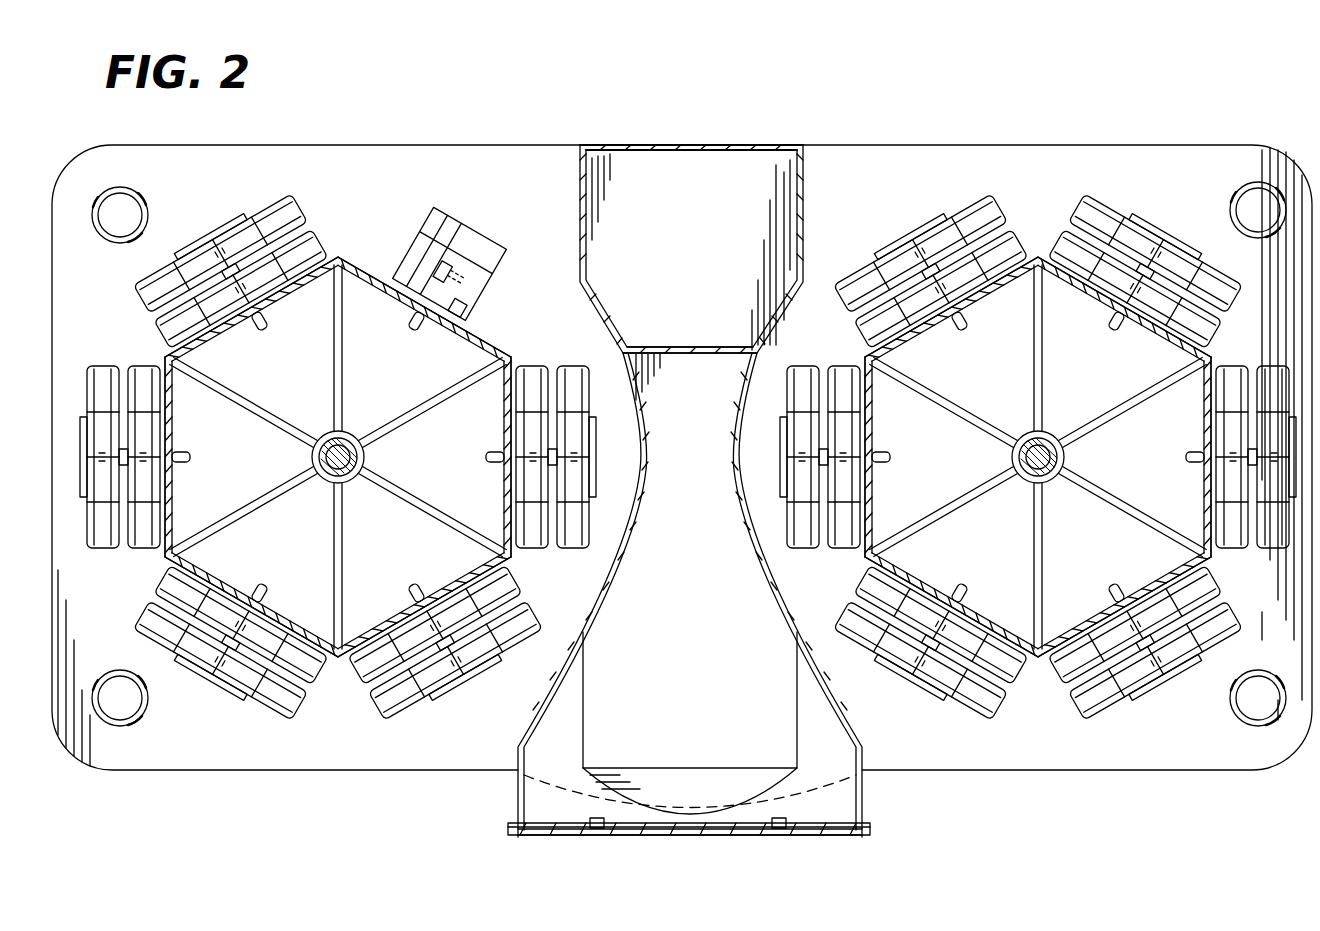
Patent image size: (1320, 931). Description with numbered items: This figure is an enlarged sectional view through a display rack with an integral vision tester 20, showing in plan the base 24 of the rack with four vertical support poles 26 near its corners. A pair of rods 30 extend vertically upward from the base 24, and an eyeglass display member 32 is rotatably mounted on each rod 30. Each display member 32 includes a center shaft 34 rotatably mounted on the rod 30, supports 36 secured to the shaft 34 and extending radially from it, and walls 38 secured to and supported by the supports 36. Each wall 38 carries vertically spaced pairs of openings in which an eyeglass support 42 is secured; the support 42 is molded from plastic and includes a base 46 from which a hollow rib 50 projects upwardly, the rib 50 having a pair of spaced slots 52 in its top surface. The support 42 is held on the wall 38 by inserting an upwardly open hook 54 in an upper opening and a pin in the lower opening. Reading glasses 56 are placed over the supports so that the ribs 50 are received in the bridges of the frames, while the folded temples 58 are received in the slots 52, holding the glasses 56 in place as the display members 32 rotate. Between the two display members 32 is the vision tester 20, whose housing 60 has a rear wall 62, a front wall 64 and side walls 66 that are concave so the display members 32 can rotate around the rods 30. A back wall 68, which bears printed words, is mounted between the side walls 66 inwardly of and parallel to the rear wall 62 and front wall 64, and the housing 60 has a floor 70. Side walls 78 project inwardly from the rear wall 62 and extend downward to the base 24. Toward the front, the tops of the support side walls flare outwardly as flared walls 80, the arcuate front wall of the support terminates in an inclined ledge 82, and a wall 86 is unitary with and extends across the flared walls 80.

The vision tester 20 is at (878, 158).
The base 24 is at (372, 748).
The vertical support poles 26 is at (150, 178).
The rods 30 is at (346, 437).
The eyeglass display member 32 is at (540, 332).
The center shaft 34 is at (326, 480).
The supports 36 is at (470, 400).
The walls 38 is at (305, 290).
The eyeglass support 42 is at (505, 185).
The base 46 is at (418, 232).
The hollow rib 50 is at (460, 233).
The slots 52 is at (455, 260).
The hook 54 is at (418, 318).
The glasses 56 is at (280, 705).
The temples 58 is at (286, 240).
The housing 60 is at (812, 248).
The rear wall 62 is at (666, 146).
The front wall 64 is at (832, 840).
The side walls 66 is at (742, 495).
The back wall 68 is at (706, 346).
The floor 70 is at (697, 561).
The side walls 78 is at (595, 192).
The flared walls 80 is at (560, 745).
The inclined ledge 82 is at (702, 806).
The wall 86 is at (812, 800).